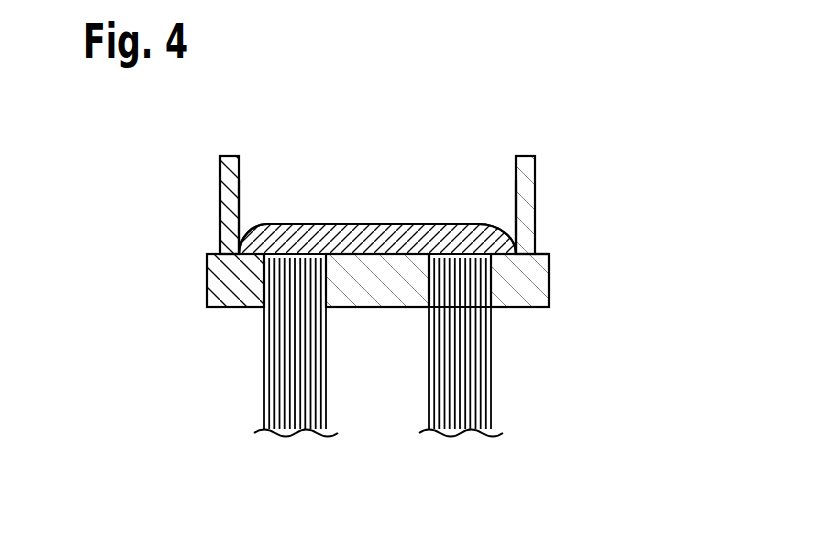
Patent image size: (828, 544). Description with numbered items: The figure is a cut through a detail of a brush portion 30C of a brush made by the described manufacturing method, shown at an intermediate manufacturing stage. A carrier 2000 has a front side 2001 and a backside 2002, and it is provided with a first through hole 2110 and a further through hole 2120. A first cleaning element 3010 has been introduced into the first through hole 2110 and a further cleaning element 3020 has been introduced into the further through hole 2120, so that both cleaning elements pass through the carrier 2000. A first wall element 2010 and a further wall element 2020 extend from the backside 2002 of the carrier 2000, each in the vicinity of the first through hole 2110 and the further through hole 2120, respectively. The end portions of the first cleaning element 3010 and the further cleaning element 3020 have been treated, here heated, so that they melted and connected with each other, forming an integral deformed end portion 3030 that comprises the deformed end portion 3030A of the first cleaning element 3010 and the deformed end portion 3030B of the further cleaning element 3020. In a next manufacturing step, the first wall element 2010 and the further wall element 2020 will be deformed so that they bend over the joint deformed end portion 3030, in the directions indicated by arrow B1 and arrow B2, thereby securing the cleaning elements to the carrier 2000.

The carrier 2000 is at (207, 285).
The further wall element 2020 is at (228, 179).
The first wall element 2010 is at (530, 173).
The front side 2001 is at (541, 252).
The backside 2002 is at (528, 308).
The integral deformed end portion 3030 is at (383, 223).
The deformed end portion of the further cleaning element 3030B is at (303, 223).
The deformed end portion of the first cleaning element 3030A is at (460, 223).
The further cleaning element 3020 is at (263, 395).
The first cleaning element 3010 is at (492, 394).
The brush portion 30C is at (520, 434).
The further through hole 2120 is at (259, 311).
The first through hole 2110 is at (494, 311).
The arrow B1 is at (507, 175).
The arrow B2 is at (279, 188).